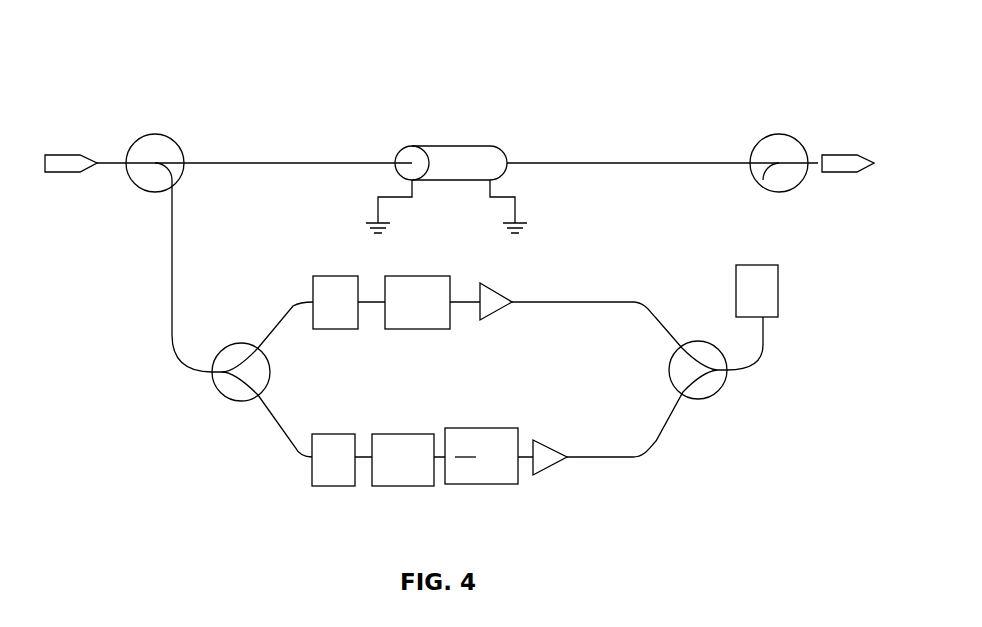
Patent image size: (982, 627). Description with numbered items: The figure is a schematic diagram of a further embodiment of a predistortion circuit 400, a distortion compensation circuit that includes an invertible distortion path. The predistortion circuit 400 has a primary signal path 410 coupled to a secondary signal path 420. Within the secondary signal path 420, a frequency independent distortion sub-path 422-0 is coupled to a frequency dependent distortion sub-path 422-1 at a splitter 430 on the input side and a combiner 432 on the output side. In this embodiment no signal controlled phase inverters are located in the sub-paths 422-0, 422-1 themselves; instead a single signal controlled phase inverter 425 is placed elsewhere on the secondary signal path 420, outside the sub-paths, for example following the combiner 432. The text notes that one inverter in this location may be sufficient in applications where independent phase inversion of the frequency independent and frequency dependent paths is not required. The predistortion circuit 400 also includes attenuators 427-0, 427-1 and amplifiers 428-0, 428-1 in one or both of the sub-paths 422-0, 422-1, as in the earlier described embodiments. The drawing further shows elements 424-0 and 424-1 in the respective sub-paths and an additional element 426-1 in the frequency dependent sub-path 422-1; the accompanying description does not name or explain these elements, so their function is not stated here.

The predistortion circuit 400 is at (209, 72).
The primary signal path 410 is at (486, 106).
The secondary signal path 420 is at (81, 314).
The frequency independent distortion sub-path 422-0 is at (259, 310).
The frequency dependent distortion sub-path 422-1 is at (249, 453).
The squaring circuit 424-0 is at (330, 329).
The squaring circuit 424-1 is at (327, 486).
The signal controlled phase inverter 425 is at (778, 300).
The derivative filter 426-1 is at (490, 484).
The attenuator 427-0 is at (413, 329).
The attenuator 427-1 is at (407, 486).
The amplifier 428-0 is at (500, 310).
The amplifier 428-1 is at (553, 467).
The splitter 430 is at (213, 379).
The combiner 432 is at (712, 396).